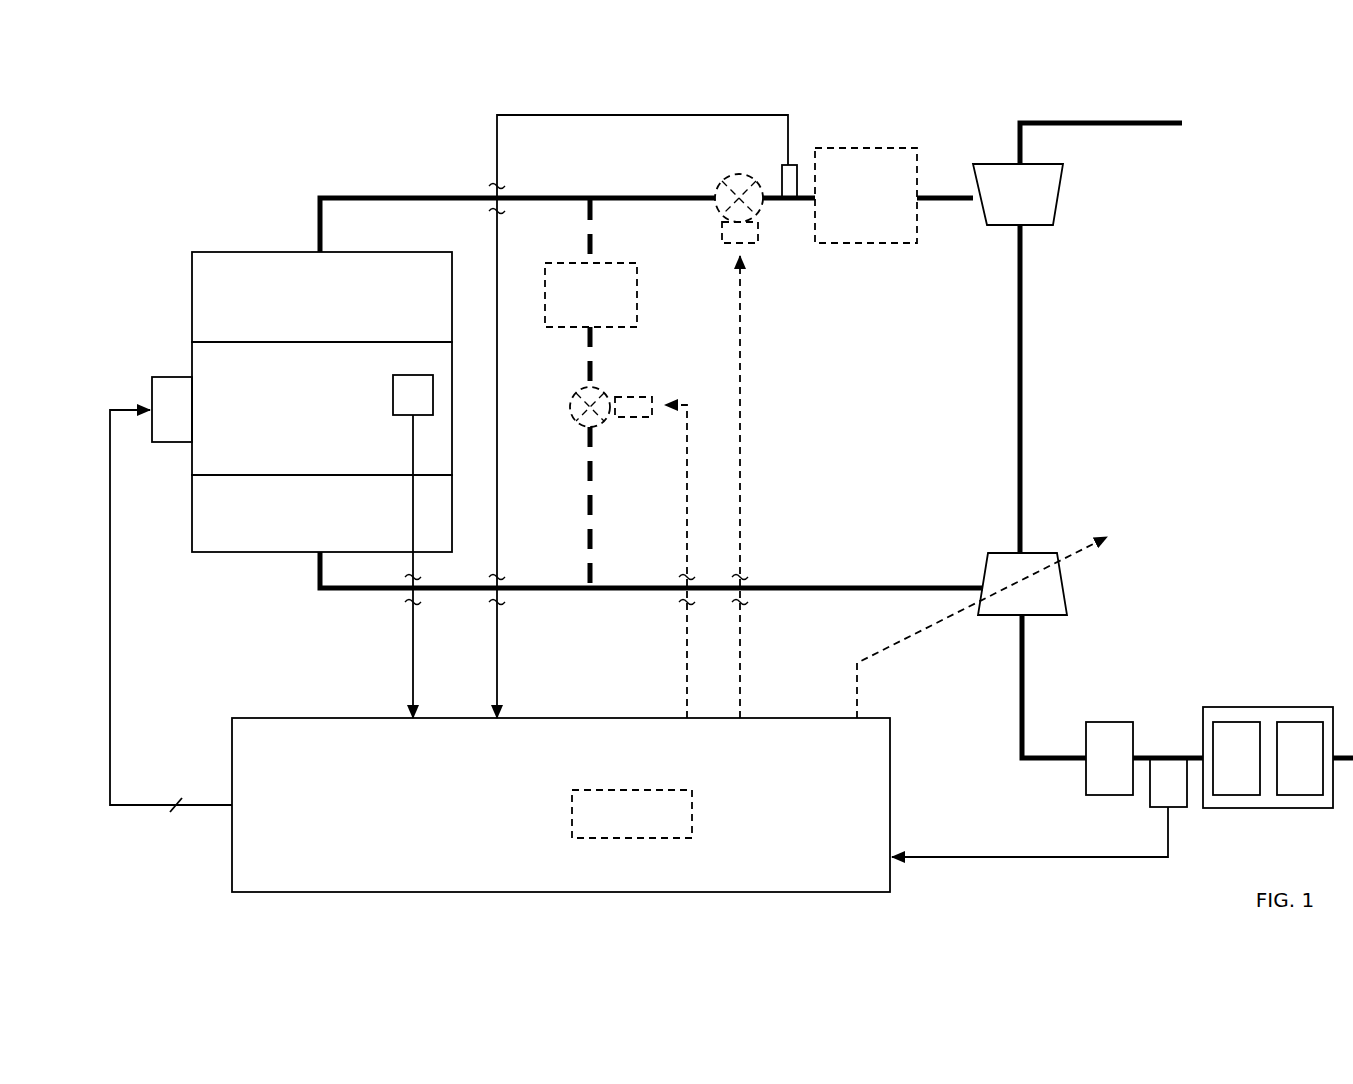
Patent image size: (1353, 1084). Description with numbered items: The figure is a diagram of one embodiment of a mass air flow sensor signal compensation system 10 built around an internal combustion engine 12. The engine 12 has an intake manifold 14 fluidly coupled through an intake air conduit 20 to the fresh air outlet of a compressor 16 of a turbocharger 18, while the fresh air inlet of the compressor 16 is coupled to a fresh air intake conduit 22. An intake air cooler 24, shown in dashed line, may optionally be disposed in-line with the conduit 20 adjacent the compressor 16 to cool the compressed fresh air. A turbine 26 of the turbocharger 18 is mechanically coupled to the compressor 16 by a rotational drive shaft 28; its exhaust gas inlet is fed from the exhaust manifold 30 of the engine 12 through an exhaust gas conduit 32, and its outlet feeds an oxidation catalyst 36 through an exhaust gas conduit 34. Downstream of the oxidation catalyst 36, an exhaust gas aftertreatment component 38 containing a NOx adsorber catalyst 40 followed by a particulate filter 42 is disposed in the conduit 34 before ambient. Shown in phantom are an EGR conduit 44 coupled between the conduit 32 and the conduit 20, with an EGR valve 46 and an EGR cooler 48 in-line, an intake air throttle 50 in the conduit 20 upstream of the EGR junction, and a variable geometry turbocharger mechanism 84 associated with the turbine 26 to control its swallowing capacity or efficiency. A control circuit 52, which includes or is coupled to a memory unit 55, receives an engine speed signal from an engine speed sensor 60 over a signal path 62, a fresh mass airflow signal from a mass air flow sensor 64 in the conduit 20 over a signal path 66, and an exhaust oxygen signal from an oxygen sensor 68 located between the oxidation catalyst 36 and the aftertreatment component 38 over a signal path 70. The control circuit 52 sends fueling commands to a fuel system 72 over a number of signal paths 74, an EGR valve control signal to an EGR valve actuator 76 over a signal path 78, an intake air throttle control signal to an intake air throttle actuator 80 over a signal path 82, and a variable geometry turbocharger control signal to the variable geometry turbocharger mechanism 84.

The mass air flow sensor signal compensation system 10 is at (170, 164).
The internal combustion engine 12 is at (192, 355).
The intake manifold 14 is at (237, 250).
The compressor 16 is at (1058, 200).
The turbocharger 18 is at (1057, 335).
The intake air conduit 20 is at (373, 196).
The fresh air intake conduit 22 is at (1017, 143).
The intake air cooler 24 is at (873, 244).
The turbine 26 is at (986, 565).
The rotational drive shaft 28 is at (1017, 402).
The exhaust manifold 30 is at (236, 554).
The exhaust gas conduit 32 is at (848, 586).
The exhaust gas conduit 34 is at (1019, 691).
The oxidation catalyst 36 is at (1104, 720).
The exhaust gas aftertreatment component 38 is at (1318, 706).
The NOx adsorber catalyst 40 is at (1233, 798).
The particulate filter 42 is at (1302, 797).
The EGR conduit 44 is at (588, 488).
The EGR valve 46 is at (568, 403).
The EGR cooler 48 is at (637, 291).
The intake air throttle 50 is at (715, 207).
The control circuit 52 is at (890, 796).
The memory unit 55 is at (692, 800).
The engine speed sensor 60 is at (393, 389).
The signal path 62 is at (410, 640).
The mass air flow sensor 64 is at (782, 172).
The signal path 66 is at (496, 638).
The oxygen sensor 68 is at (1158, 810).
The signal path 70 is at (990, 853).
The fuel system 72 is at (172, 444).
The signal paths 74 is at (112, 625).
The EGR valve actuator 76 is at (628, 419).
The signal path 78 is at (685, 646).
The intake air throttle actuator 80 is at (746, 245).
The signal path 82 is at (745, 630).
The variable geometry turbocharger mechanism 84 is at (1085, 541).